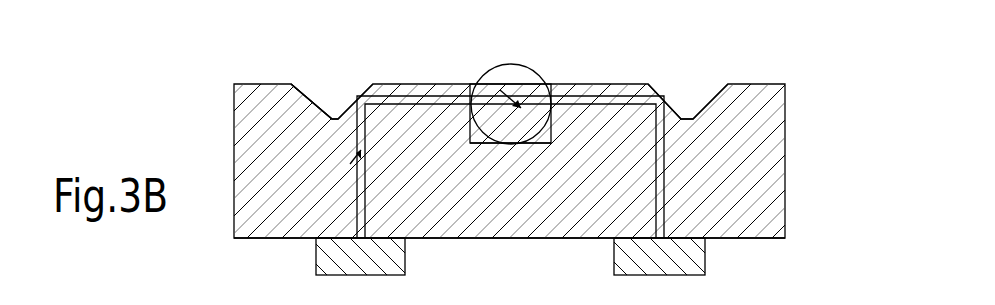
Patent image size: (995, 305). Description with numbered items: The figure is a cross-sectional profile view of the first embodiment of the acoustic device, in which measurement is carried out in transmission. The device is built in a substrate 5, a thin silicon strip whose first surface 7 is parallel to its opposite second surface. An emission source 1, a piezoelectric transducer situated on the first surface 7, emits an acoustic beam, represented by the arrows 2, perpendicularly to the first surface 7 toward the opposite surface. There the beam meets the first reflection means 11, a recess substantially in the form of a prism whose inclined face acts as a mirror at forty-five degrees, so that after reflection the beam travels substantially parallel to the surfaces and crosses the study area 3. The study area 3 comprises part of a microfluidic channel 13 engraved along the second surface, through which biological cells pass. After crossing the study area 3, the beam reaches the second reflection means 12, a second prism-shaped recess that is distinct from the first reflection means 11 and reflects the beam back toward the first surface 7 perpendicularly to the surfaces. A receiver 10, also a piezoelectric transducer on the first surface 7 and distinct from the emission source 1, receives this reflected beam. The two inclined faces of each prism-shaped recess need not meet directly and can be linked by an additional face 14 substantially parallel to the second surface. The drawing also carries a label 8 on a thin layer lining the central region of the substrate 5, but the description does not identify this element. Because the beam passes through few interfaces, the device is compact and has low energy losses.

The emission source 1 is at (328, 255).
The arrows 2 is at (365, 210).
The study area 3 is at (532, 66).
The substrate 5 is at (782, 157).
The first surface 7 is at (243, 240).
The layer 8 is at (421, 84).
The receiver 10 is at (703, 255).
The first reflection means 11 is at (338, 104).
The second reflection means 12 is at (690, 104).
The microfluidic channel 13 is at (535, 144).
The additional face 14 is at (335, 122).